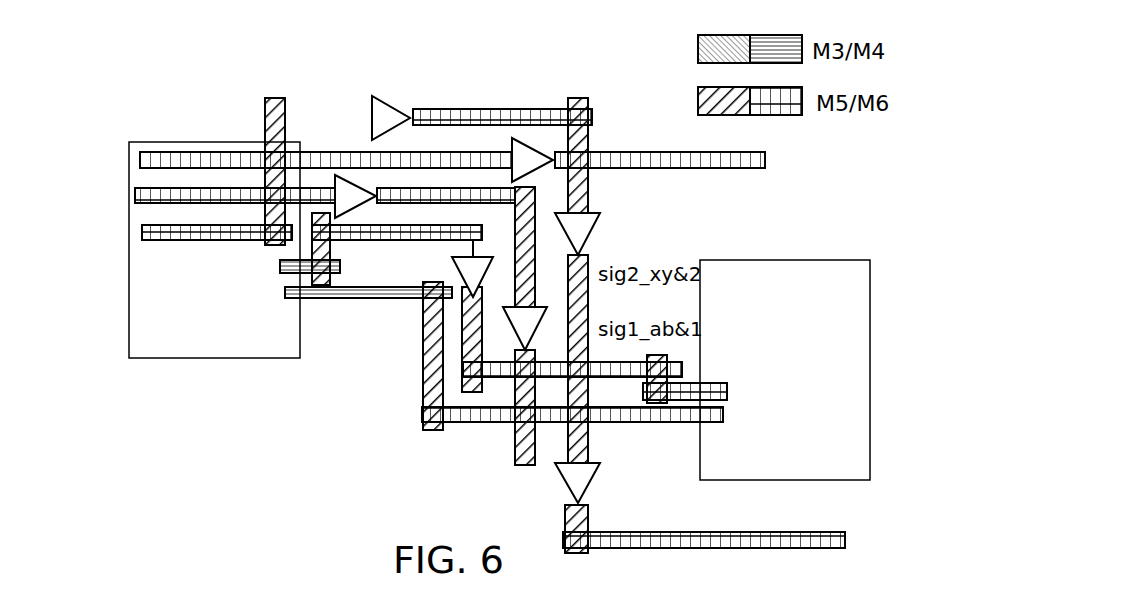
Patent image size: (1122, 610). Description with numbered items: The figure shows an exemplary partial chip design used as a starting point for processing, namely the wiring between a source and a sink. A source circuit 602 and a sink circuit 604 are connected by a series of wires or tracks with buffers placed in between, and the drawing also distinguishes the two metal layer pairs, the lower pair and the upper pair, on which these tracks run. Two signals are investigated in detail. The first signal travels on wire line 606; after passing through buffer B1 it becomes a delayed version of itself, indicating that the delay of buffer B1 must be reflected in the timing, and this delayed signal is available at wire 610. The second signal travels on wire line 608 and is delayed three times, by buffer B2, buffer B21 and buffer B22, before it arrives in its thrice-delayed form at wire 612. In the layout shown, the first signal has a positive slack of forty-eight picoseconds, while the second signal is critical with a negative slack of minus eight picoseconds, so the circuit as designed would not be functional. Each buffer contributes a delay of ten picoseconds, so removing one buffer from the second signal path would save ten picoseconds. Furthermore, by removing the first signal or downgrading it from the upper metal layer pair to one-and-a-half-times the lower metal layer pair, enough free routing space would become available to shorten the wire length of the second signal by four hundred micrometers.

The source circuit 602 is at (208, 349).
The sink circuit 604 is at (796, 464).
The wire line 606 is at (352, 243).
The wire line 608 is at (140, 232).
The wire 610 is at (549, 107).
The wire 612 is at (849, 539).
The buffer B1 is at (455, 279).
The buffer B2 is at (391, 105).
The buffer B21 is at (601, 234).
The buffer B22 is at (601, 483).